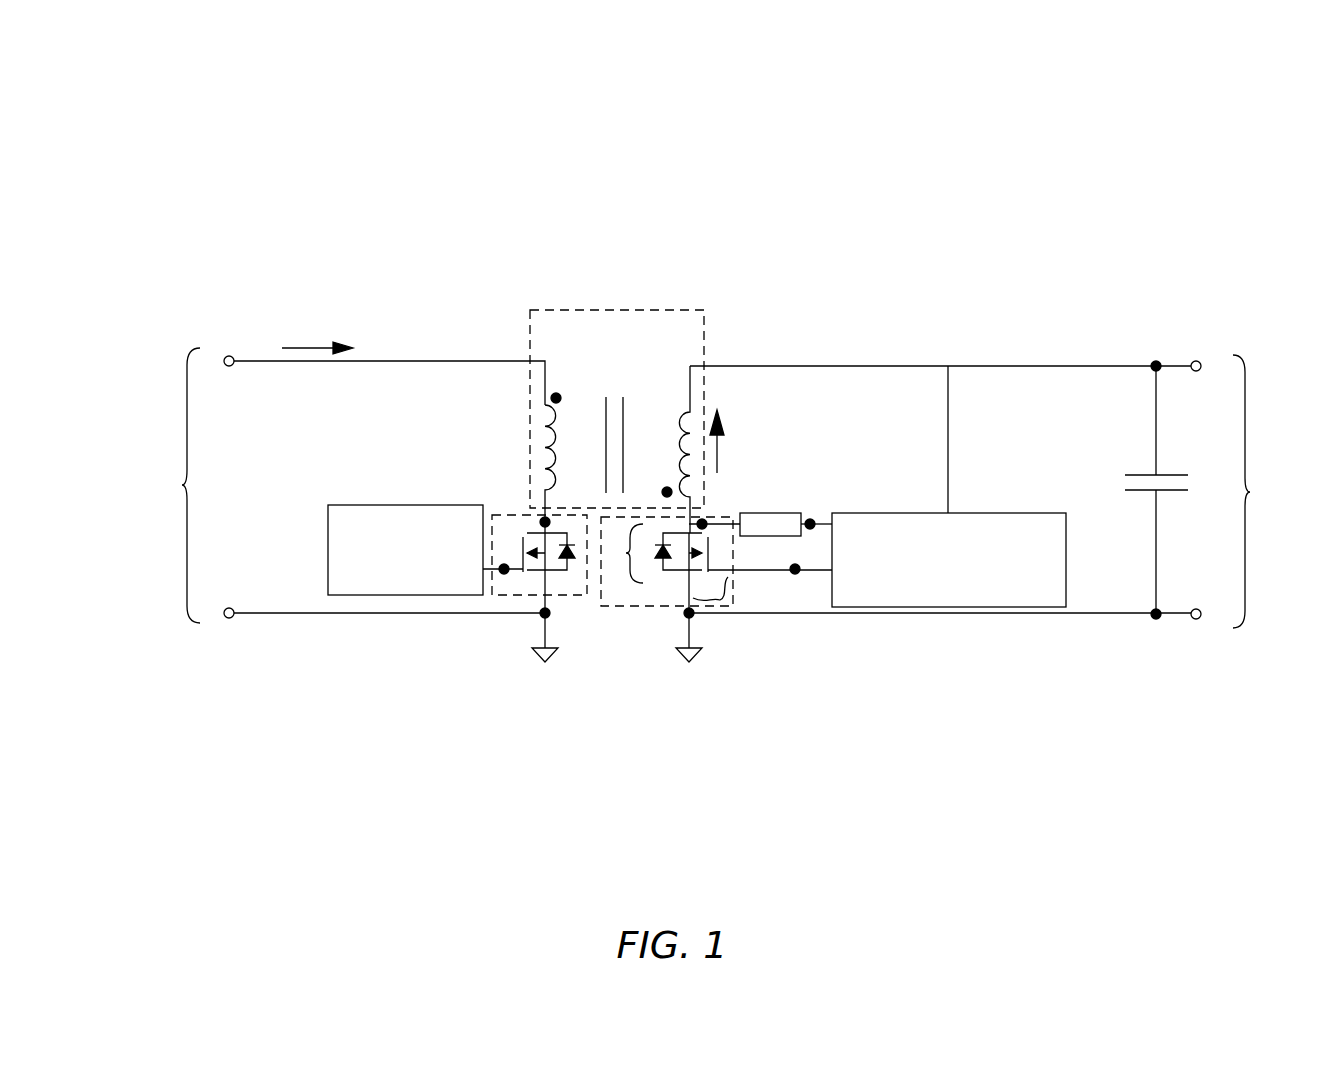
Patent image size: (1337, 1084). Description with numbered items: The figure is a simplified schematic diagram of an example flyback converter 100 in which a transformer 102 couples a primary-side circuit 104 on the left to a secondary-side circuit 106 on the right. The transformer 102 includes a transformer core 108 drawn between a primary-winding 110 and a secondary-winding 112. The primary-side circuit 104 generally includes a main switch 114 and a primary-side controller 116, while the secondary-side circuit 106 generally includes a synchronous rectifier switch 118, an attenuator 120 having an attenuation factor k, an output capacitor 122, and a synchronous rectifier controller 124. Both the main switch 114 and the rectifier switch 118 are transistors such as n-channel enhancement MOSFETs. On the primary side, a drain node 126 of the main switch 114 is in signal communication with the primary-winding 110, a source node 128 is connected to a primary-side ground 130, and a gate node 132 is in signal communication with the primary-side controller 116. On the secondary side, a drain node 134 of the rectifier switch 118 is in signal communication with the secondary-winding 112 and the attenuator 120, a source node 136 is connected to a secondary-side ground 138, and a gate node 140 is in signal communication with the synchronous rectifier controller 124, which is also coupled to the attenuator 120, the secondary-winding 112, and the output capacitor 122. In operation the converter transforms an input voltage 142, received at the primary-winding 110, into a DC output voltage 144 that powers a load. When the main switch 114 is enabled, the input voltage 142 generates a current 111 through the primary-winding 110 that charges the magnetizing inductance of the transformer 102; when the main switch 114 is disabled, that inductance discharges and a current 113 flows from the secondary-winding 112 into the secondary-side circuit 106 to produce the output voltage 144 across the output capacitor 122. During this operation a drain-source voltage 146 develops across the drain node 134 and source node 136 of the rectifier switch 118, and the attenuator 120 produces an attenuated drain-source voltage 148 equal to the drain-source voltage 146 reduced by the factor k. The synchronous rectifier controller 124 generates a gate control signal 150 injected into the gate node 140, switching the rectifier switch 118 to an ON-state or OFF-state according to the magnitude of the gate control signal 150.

The flyback converter 100 is at (745, 120).
The transformer 102 is at (595, 310).
The primary-side circuit 104 is at (537, 780).
The secondary-side circuit 106 is at (703, 780).
The transformer core 108 is at (612, 398).
The primary-winding 110 is at (552, 420).
The current 111 is at (303, 347).
The secondary-winding 112 is at (680, 428).
The current 113 is at (720, 447).
The main switch 114 is at (500, 598).
The primary-side controller 116 is at (425, 550).
The synchronous rectifier switch 118 is at (733, 553).
The attenuator 120 is at (765, 513).
The output capacitor 122 is at (1140, 475).
The synchronous rectifier controller 124 is at (949, 560).
The drain node 126 is at (545, 522).
The source node 128 is at (545, 613).
The primary-side ground 130 is at (534, 665).
The gate node 132 is at (504, 569).
The drain node 134 is at (702, 524).
The source node 136 is at (689, 613).
The secondary-side ground 138 is at (695, 664).
The gate node 140 is at (795, 569).
The input voltage 142 is at (168, 485).
The output voltage 144 is at (1267, 491).
The drain-source voltage 146 is at (626, 553).
The attenuated drain-source voltage 148 is at (810, 522).
The gate control signal 150 is at (718, 597).